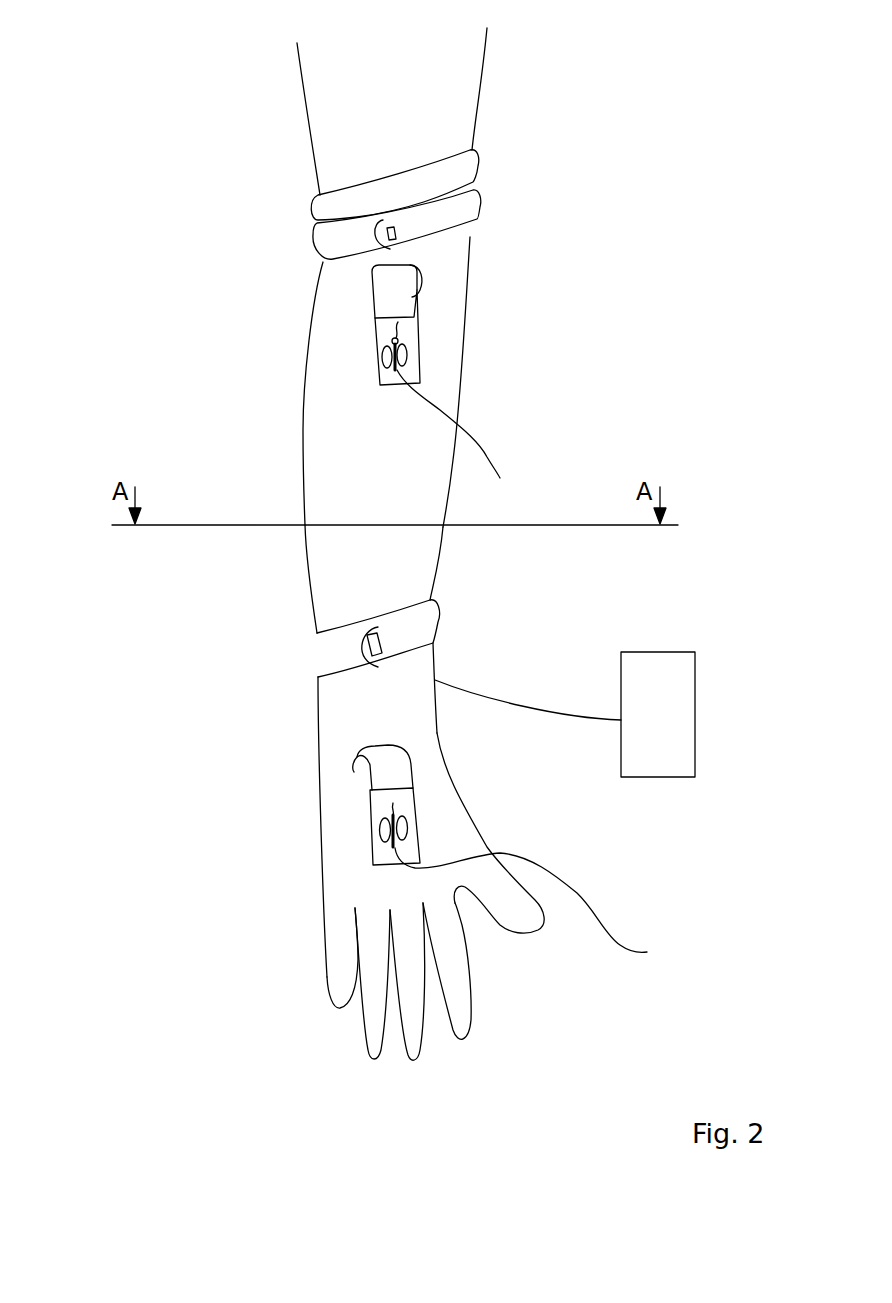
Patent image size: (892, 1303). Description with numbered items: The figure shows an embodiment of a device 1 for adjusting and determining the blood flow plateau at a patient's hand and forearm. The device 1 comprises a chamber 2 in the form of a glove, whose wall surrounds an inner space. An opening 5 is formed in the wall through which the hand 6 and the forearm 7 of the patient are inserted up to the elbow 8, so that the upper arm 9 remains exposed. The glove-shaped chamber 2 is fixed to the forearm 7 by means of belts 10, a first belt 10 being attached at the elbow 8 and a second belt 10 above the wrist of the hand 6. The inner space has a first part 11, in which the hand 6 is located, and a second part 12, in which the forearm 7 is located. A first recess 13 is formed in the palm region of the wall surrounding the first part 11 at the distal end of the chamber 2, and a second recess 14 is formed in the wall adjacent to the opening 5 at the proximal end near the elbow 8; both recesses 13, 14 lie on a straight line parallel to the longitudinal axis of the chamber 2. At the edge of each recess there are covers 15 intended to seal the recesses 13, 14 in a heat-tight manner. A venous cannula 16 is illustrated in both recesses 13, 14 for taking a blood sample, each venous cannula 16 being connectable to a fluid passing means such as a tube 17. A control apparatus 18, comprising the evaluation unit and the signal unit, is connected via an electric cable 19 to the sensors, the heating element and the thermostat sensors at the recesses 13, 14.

The device 1 is at (212, 388).
The chamber 2 is at (325, 450).
The opening 5 is at (401, 162).
The hand 6 is at (351, 896).
The forearm 7 is at (299, 751).
The elbow 8 is at (313, 184).
The upper arm 9 is at (467, 73).
The belt 10 is at (333, 246).
The first part 11 is at (353, 873).
The second part 12 is at (337, 560).
The first recess 13 is at (388, 811).
The second recess 14 is at (407, 333).
The cover 15 is at (400, 288).
The venous cannula 16 is at (407, 355).
The tube 17 is at (478, 430).
The control apparatus 18 is at (688, 678).
The electric cable 19 is at (563, 712).